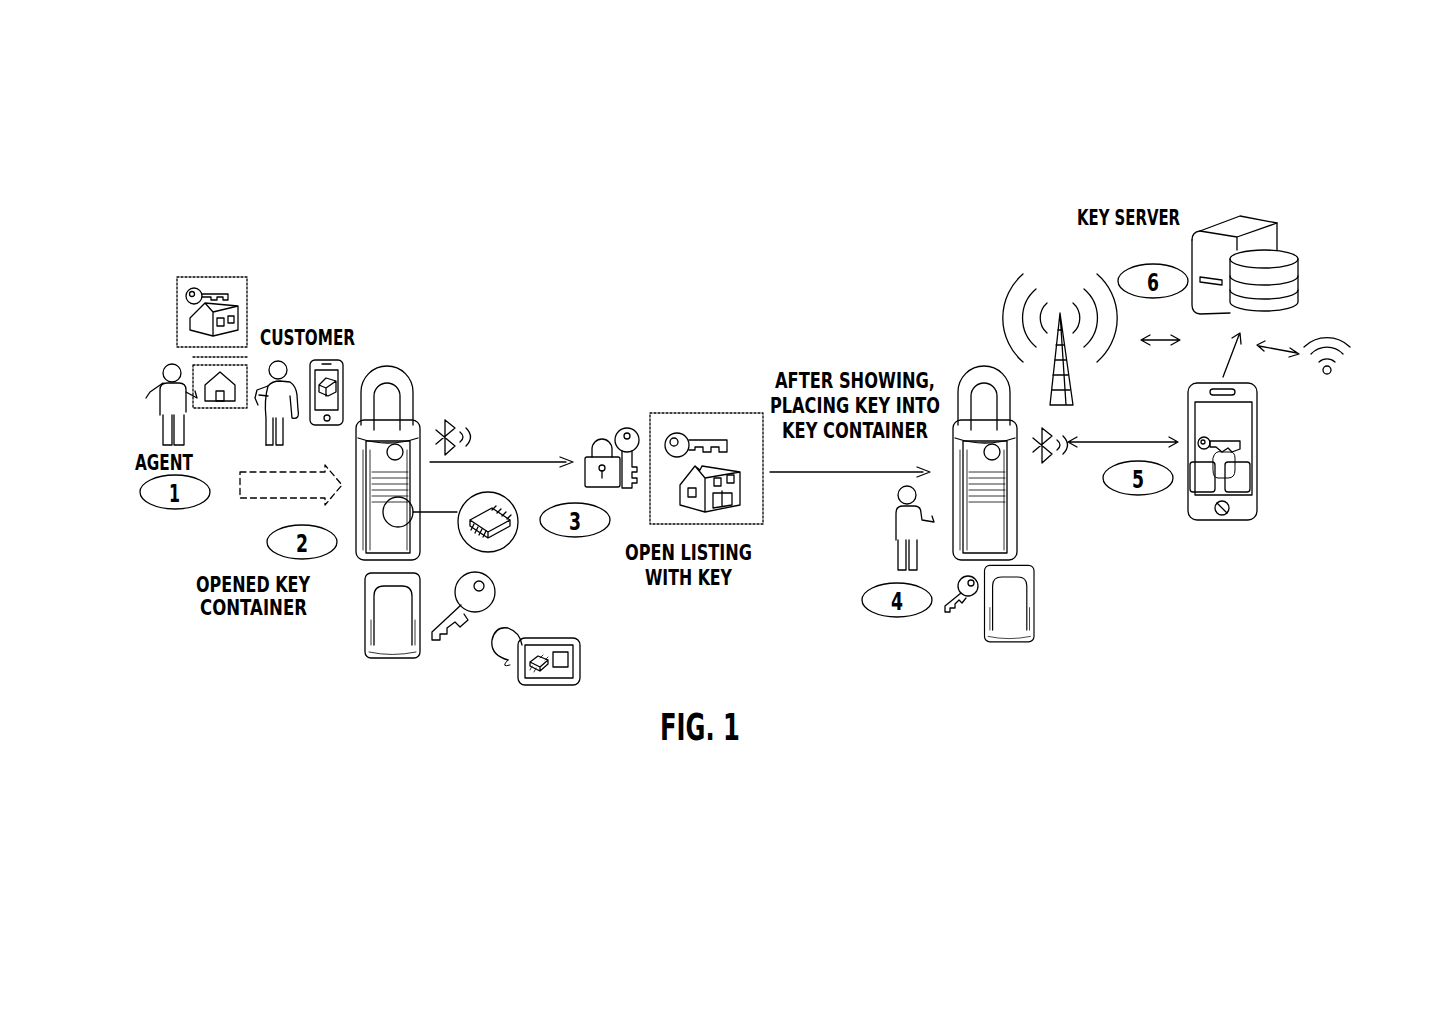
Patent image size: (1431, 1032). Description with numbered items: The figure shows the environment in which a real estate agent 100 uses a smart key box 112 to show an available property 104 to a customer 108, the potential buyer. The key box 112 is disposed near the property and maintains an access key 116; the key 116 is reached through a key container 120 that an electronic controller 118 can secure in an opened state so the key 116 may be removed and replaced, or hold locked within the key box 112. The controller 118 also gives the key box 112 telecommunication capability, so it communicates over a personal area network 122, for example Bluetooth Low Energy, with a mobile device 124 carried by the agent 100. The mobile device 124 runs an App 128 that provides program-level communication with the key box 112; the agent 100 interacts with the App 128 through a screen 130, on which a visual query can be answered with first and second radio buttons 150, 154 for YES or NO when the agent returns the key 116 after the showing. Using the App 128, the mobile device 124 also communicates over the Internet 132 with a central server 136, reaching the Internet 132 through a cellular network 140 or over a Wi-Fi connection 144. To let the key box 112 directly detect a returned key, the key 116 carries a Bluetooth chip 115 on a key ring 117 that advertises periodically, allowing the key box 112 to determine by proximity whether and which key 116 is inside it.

The real estate agent 100 is at (150, 394).
The available property 104 is at (195, 375).
The customer 108 is at (268, 405).
The key box 112 is at (357, 540).
The Bluetooth chip 115 is at (545, 662).
The key 116 is at (459, 636).
The key ring 117 is at (557, 688).
The electronic controller 118 is at (507, 548).
The key container 120 is at (361, 578).
The personal area network 122 is at (1085, 470).
The mobile device 124 is at (1264, 483).
The App 128 is at (1258, 460).
The screen 130 is at (1245, 437).
The Internet 132 is at (1245, 365).
The central server 136 is at (1290, 268).
The cellular network 140 is at (1060, 288).
The wireless access point 144 is at (1343, 368).
The first radio button 150 is at (1225, 516).
The second radio button 154 is at (1245, 490).